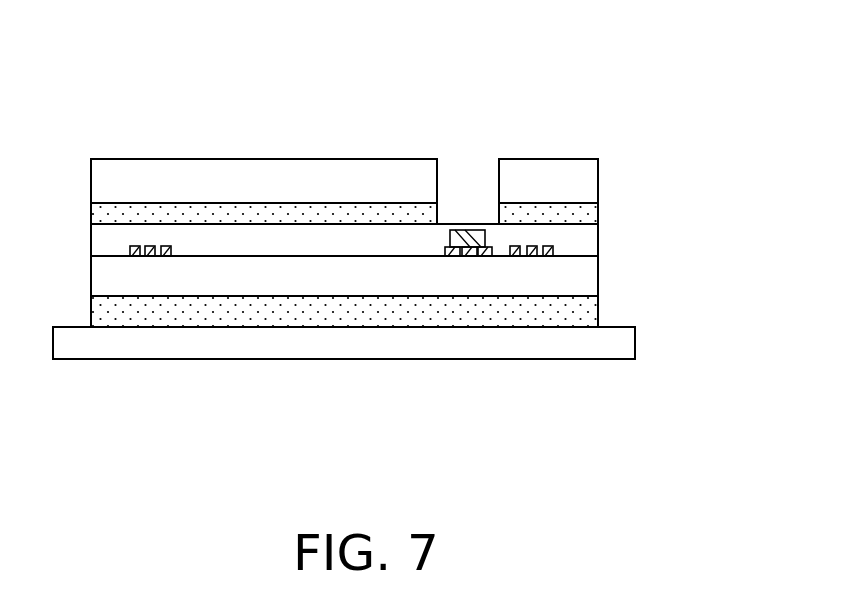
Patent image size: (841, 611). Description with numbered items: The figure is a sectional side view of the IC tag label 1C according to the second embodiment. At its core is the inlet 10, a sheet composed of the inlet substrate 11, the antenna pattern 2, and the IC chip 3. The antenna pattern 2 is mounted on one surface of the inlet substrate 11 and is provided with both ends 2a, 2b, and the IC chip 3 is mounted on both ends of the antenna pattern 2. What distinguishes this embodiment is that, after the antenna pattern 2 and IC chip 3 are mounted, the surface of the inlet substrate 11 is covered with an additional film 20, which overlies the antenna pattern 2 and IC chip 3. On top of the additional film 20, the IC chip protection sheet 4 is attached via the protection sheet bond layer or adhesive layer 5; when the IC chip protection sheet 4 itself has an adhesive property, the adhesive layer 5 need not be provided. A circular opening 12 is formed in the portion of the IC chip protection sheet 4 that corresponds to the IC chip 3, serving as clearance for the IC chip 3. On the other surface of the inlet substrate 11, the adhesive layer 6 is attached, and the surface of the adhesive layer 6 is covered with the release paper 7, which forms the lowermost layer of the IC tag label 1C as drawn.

The IC tag label 1C is at (638, 110).
The antenna pattern 2 is at (130, 253).
The end of antenna pattern 2a is at (450, 257).
The end of antenna pattern 2b is at (490, 257).
The IC chip 3 is at (472, 248).
The IC chip protection sheet 4 is at (593, 173).
The protection sheet bond layer or adhesive layer 5 is at (593, 213).
The adhesive layer 6 is at (593, 311).
The release paper 7 is at (625, 347).
The inlet 10 is at (582, 410).
The inlet substrate 11 is at (352, 280).
The circular opening 12 is at (468, 195).
The additional film 20 is at (297, 243).